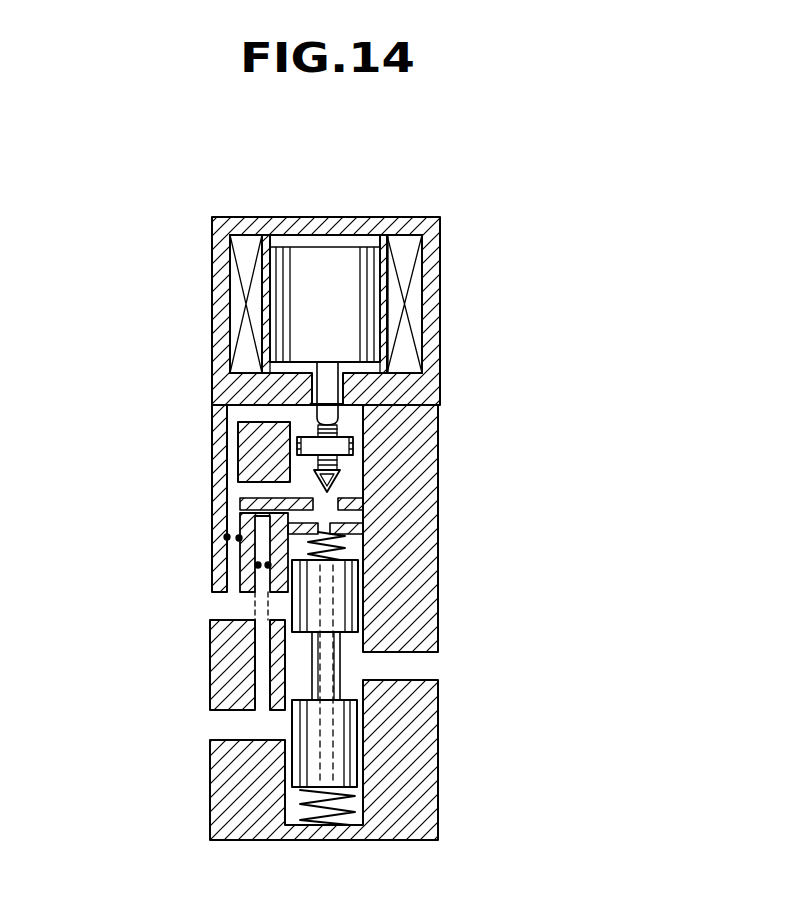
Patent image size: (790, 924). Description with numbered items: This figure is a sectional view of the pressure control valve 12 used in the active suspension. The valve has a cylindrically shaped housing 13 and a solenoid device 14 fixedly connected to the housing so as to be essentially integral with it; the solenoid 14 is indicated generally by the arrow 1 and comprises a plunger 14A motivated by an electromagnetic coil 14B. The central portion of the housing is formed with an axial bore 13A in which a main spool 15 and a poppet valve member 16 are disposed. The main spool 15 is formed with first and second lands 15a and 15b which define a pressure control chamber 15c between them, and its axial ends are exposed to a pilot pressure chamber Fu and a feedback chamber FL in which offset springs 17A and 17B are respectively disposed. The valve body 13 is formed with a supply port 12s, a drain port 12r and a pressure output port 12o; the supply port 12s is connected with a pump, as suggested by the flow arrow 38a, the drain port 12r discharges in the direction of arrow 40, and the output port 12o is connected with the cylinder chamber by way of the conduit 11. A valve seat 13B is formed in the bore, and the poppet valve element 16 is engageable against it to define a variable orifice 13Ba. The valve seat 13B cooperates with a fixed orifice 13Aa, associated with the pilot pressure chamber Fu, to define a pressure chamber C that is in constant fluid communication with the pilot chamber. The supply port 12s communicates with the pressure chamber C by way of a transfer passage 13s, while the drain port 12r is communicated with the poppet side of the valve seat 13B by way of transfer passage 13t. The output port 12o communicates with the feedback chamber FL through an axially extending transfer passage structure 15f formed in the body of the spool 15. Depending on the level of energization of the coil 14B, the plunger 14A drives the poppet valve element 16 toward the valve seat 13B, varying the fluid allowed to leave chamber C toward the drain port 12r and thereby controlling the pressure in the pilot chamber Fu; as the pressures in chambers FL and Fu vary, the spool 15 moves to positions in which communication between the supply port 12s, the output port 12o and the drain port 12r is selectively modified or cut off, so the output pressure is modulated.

The solenoid coil assembly 1 is at (226, 256).
The conduit 11 is at (441, 667).
The pressure control valve 12 is at (140, 362).
The drain port 12r is at (222, 602).
The supply port 12s is at (247, 730).
The pressure output port 12o is at (383, 678).
The housing 13 is at (440, 540).
The axial bore 13A is at (413, 544).
The fixed orifice 13Aa is at (352, 527).
The valve seat 13B is at (396, 457).
The variable orifice 13Ba is at (352, 497).
The transfer passage 13t is at (220, 484).
The transfer passage 13s is at (222, 688).
The solenoid device 14 is at (447, 313).
The plunger 14A is at (317, 265).
The electromagnetic coil 14B is at (405, 252).
The main spool 15 is at (349, 690).
The first land 15a is at (322, 770).
The second land 15b is at (340, 598).
The pressure control chamber 15c is at (348, 640).
The transfer passage structure 15f is at (290, 785).
The poppet valve member 16 is at (297, 446).
The offset spring 17A is at (245, 538).
The offset spring 17B is at (347, 805).
The supply flow 38a is at (208, 723).
The return flow 40 is at (208, 607).
The pressure chamber C is at (300, 514).
The pilot pressure chamber Fu is at (272, 565).
The feedback chamber FL is at (300, 812).